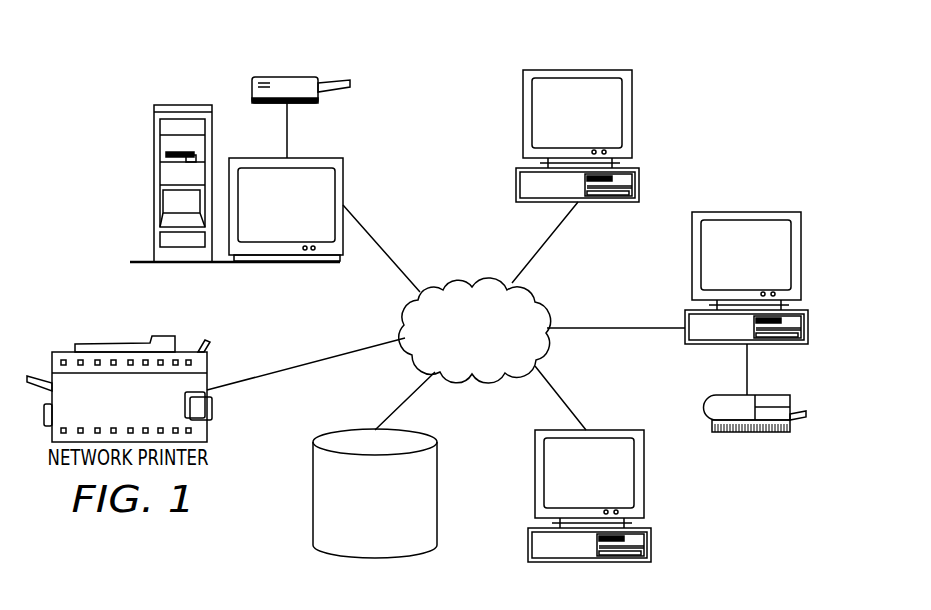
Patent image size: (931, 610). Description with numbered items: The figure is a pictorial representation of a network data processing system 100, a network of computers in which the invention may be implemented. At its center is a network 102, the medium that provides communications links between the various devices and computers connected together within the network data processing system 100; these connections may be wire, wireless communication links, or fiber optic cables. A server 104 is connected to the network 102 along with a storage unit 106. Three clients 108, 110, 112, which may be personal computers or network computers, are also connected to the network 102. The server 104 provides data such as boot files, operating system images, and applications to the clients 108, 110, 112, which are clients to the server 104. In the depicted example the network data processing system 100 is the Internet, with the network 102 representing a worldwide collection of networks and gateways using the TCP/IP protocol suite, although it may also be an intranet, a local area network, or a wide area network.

The network data processing system 100 is at (747, 107).
The network 102 is at (468, 280).
The server 104 is at (268, 216).
The storage unit 106 is at (313, 510).
The client 108 is at (559, 121).
The client 110 is at (728, 263).
The client 112 is at (569, 481).